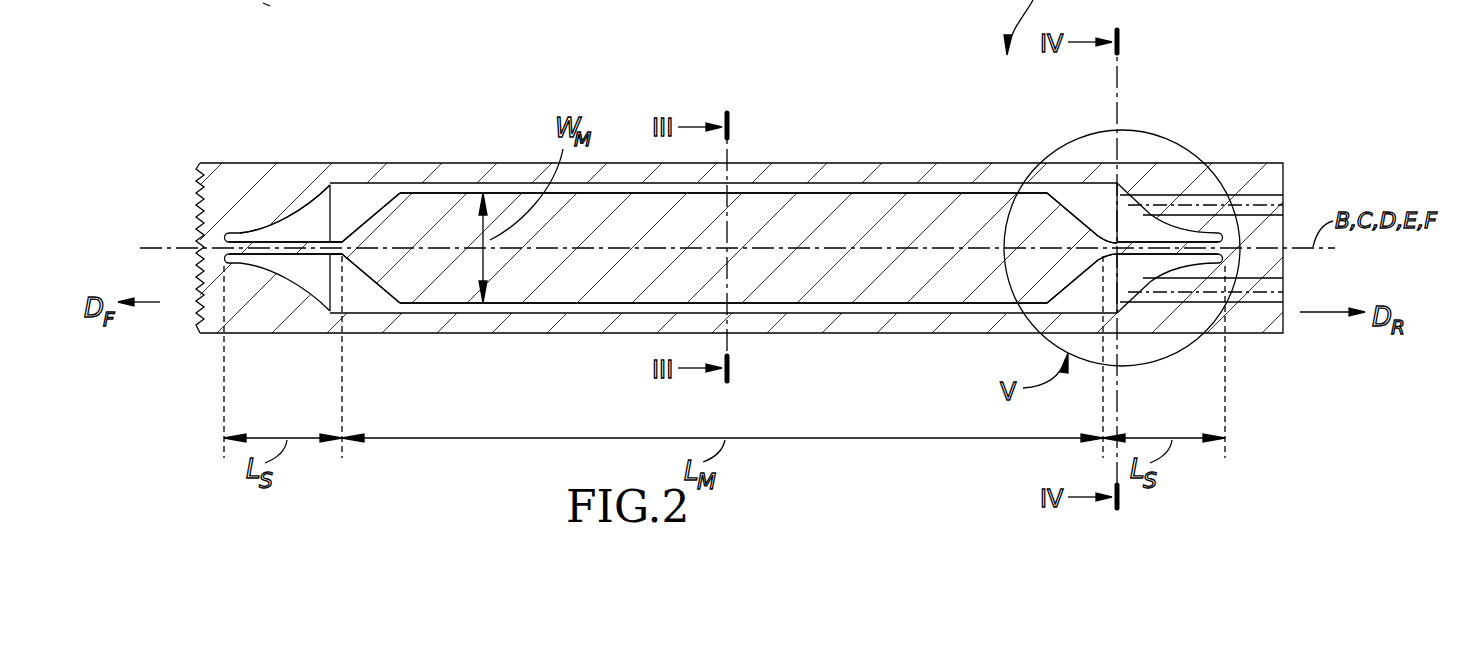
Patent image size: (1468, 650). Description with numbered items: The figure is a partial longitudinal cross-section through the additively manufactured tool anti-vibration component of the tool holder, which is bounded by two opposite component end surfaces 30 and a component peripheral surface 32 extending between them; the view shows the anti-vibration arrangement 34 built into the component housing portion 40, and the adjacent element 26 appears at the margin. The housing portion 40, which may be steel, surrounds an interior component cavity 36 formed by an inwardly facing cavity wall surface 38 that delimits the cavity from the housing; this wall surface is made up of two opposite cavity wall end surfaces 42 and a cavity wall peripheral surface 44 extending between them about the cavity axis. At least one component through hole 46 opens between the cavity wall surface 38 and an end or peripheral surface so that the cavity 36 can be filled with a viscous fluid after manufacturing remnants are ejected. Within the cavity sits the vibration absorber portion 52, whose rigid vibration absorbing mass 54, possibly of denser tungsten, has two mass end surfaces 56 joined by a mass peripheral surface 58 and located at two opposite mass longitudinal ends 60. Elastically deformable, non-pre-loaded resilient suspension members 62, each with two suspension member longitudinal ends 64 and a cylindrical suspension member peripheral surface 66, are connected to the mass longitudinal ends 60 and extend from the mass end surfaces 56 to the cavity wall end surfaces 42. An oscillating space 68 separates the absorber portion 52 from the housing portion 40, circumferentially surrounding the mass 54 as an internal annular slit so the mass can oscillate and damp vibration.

The device 26 is at (284, 10).
The component end surfaces 30 is at (197, 195).
The component peripheral surface 32 is at (863, 160).
The anti-vibration arrangement 34 is at (803, 152).
The interior component cavity 36 is at (363, 194).
The cavity wall surface 38 is at (385, 189).
The component housing portion 40 is at (905, 172).
The cavity wall end surfaces 42 is at (286, 215).
The cavity wall peripheral surface 44 is at (580, 184).
The component through hole 46 is at (1253, 200).
The vibration absorber portion 52 is at (758, 215).
The vibration absorbing mass 54 is at (620, 230).
The mass end surfaces 56 is at (333, 182).
The mass peripheral surface 58 is at (967, 194).
The mass longitudinal ends 60 is at (388, 258).
The resilient suspension member 62 is at (265, 241).
The suspension member longitudinal ends 64 is at (240, 258).
The suspension member peripheral surface 66 is at (290, 255).
The oscillating space 68 is at (468, 192).